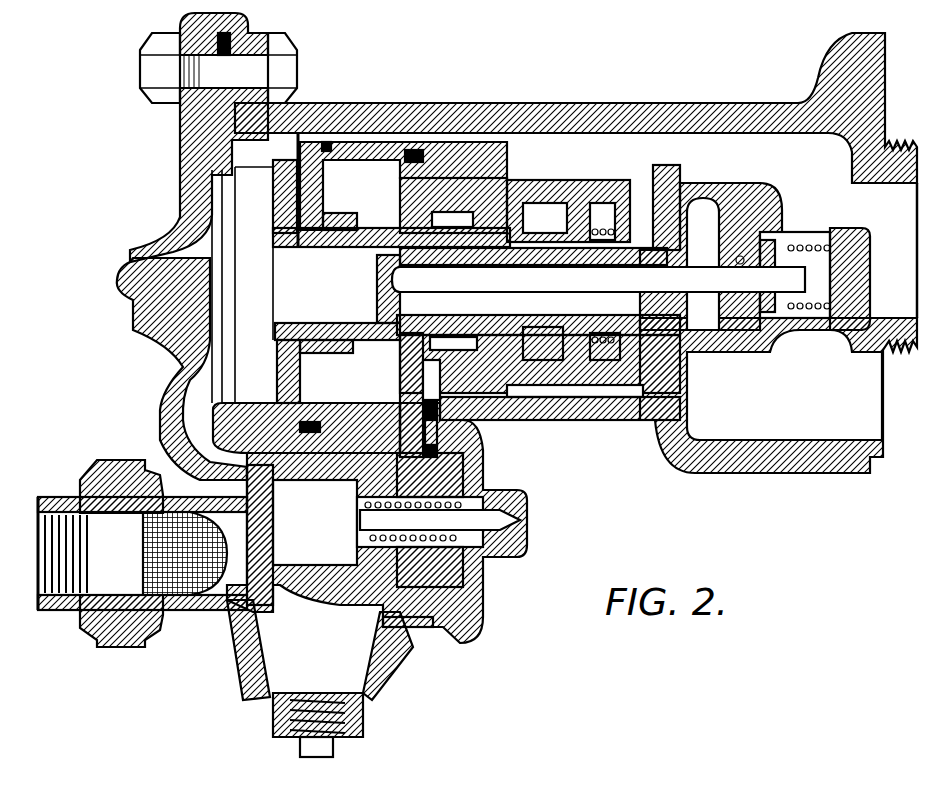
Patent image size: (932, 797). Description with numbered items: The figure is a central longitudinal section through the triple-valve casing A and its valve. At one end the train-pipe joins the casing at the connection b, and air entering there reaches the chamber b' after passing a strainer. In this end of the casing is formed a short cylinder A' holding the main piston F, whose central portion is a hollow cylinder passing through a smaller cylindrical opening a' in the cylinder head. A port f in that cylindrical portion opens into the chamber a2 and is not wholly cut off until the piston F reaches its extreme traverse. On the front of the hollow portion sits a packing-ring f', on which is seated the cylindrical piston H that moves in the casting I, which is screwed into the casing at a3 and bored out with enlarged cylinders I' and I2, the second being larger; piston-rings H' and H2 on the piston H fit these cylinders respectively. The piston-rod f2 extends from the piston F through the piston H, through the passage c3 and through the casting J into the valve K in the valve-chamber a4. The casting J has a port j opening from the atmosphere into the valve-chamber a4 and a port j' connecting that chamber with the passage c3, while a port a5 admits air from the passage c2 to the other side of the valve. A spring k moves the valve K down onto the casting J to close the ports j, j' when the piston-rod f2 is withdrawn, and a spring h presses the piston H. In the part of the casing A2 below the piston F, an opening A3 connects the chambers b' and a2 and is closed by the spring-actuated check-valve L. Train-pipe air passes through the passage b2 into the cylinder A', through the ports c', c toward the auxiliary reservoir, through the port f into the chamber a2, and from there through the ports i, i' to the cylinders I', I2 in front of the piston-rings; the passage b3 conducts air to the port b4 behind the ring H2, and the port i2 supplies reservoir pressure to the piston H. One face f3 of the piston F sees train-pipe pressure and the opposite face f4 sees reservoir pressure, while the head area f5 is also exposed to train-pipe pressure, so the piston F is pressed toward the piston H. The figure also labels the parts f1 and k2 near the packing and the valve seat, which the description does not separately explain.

The triple-valve casing A is at (576, 175).
The short cylinder A' is at (253, 290).
The part of the casing A2 is at (306, 428).
The opening A3 is at (377, 523).
The cylindrical opening a' is at (303, 261).
The chamber a2 is at (350, 283).
The screw connection a3 is at (440, 195).
The valve-chamber a4 is at (805, 245).
The port a5 is at (812, 338).
The train-pipe connection b is at (155, 539).
The chamber b' is at (320, 678).
The passage b2 is at (198, 418).
The passage b3 is at (420, 150).
The port b4 is at (425, 372).
The passage c is at (801, 170).
The port c' is at (402, 163).
The passage c2 is at (778, 395).
The passage c3 is at (709, 348).
The main piston F is at (197, 284).
The diaphragm chamber F'' is at (306, 281).
The port f is at (362, 255).
The packing-ring f' is at (405, 303).
The packing f1 is at (380, 270).
The piston-rod f2 is at (692, 290).
The face of the piston f3 is at (275, 205).
The face of the piston f4 is at (303, 142).
The cylinder-head area f5 is at (380, 290).
The cylindrical piston H is at (598, 291).
The piston-ring H' is at (490, 275).
The piston-ring H2 is at (590, 237).
The casting I is at (392, 118).
The cylinder I' is at (459, 152).
The cylinder I2 is at (568, 270).
The port i is at (396, 183).
The port i' is at (518, 165).
The port i2 is at (640, 178).
The casting J is at (728, 245).
The port j is at (720, 256).
The port j' is at (763, 298).
The valve K is at (850, 272).
The spring k is at (850, 231).
The valve seat k' is at (457, 318).
The valve seat k2 is at (650, 240).
The spring h is at (600, 215).
The check-valve L is at (358, 500).